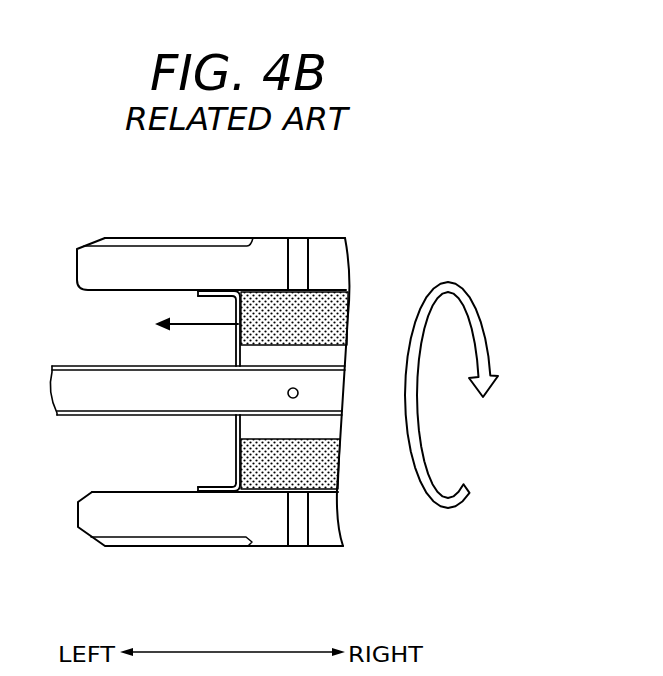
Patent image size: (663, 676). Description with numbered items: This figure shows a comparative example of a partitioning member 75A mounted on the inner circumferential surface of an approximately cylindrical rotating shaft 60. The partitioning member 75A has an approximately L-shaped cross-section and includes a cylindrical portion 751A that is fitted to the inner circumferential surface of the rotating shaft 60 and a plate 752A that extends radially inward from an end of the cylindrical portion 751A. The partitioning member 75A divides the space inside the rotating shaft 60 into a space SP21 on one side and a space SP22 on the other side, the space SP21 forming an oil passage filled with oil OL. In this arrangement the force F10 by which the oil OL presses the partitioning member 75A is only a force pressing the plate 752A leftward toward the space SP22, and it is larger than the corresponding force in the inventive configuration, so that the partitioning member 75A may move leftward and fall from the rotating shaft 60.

The rotating shaft 60 is at (327, 238).
The space SP22 is at (180, 303).
The space SP21 is at (282, 315).
The oil OL is at (330, 316).
The partitioning member 75A is at (230, 436).
The cylindrical portion 751A is at (218, 492).
The plate 752A is at (235, 448).
The force F10 is at (173, 325).